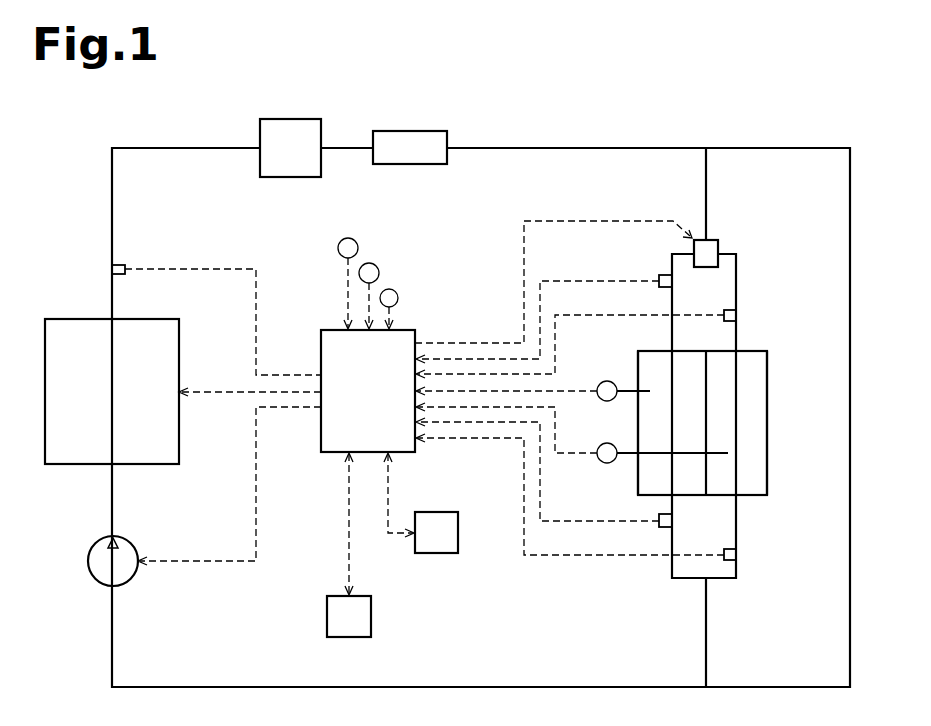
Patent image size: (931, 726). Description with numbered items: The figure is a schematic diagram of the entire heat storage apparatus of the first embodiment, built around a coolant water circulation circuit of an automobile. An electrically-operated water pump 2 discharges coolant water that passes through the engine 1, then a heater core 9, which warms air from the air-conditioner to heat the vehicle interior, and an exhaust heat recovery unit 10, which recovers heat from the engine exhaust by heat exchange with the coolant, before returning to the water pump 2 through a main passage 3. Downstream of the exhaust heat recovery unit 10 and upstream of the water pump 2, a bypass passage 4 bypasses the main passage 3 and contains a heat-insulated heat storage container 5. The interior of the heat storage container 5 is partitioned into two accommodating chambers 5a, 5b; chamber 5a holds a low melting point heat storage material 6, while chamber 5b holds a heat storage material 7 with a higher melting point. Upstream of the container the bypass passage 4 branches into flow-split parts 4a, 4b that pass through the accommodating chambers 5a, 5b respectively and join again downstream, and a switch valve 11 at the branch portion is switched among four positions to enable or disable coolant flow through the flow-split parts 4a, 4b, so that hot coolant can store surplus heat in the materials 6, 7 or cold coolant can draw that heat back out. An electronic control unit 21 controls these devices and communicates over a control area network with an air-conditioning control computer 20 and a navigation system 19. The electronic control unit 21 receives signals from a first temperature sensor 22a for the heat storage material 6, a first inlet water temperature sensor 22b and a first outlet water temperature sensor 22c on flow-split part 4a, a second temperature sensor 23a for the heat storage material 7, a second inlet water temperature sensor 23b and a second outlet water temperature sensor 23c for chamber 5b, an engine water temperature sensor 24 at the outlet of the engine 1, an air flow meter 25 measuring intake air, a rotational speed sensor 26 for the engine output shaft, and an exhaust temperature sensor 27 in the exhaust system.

The engine 1 is at (152, 319).
The water pump 2 is at (88, 561).
The main passage 3 is at (850, 513).
The bypass passage 4 is at (706, 173).
The flow-split part 4a is at (672, 254).
The flow-split part 4b is at (736, 254).
The heat storage container 5 is at (769, 349).
The accommodating chamber 5a is at (638, 351).
The accommodating chamber 5b is at (767, 377).
The low melting point heat storage material 6 is at (648, 415).
The heat storage material 7 is at (760, 432).
The heater core 9 is at (290, 119).
The exhaust heat recovery unit 10 is at (447, 131).
The switch valve 11 is at (718, 240).
The navigation system 19 is at (371, 596).
The air-conditioning control computer 20 is at (458, 512).
The electronic control unit 21 is at (415, 330).
The first temperature sensor 22a is at (602, 401).
The first inlet water temperature sensor 22b is at (659, 283).
The first outlet water temperature sensor 22c is at (659, 527).
The second temperature sensor 23a is at (603, 463).
The second inlet water temperature sensor 23b is at (724, 310).
The second outlet water temperature sensor 23c is at (724, 549).
The engine water temperature sensor 24 is at (125, 265).
The air flow meter 25 is at (354, 238).
The rotational speed sensor 26 is at (375, 263).
The exhaust temperature sensor 27 is at (396, 289).